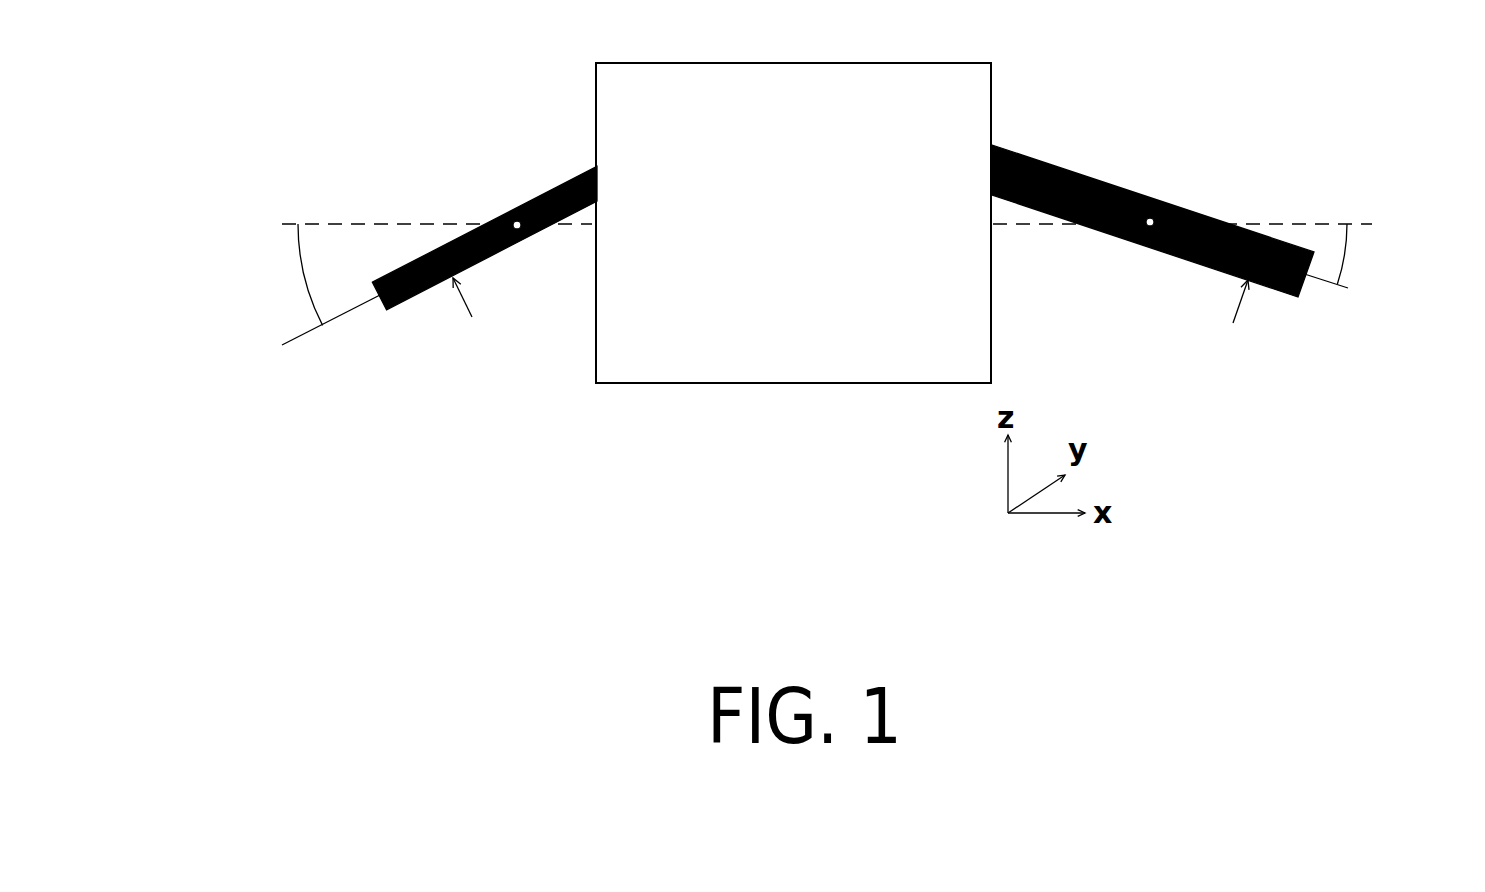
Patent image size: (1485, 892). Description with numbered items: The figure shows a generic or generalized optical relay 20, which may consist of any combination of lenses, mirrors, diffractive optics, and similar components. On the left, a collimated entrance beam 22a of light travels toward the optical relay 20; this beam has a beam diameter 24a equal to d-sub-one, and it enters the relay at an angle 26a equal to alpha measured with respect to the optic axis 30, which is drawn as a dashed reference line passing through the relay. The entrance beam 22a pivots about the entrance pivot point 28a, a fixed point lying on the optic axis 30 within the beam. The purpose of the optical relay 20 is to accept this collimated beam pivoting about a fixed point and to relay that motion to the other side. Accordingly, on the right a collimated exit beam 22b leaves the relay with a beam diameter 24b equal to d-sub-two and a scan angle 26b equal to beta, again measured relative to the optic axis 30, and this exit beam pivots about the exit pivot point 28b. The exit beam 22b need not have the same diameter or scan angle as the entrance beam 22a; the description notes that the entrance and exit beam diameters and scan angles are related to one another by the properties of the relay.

The optical relay 20 is at (798, 383).
The collimated entrance beam 22a is at (397, 309).
The collimated exit beam 22b is at (1107, 234).
The beam diameter 24a is at (438, 247).
The beam diameter 24b is at (1263, 230).
The entrance angle 26a is at (299, 247).
The scan angle 26b is at (1345, 260).
The entrance pivot point 28a is at (514, 222).
The exit pivot point 28b is at (1152, 219).
The optic axis 30 is at (1372, 224).